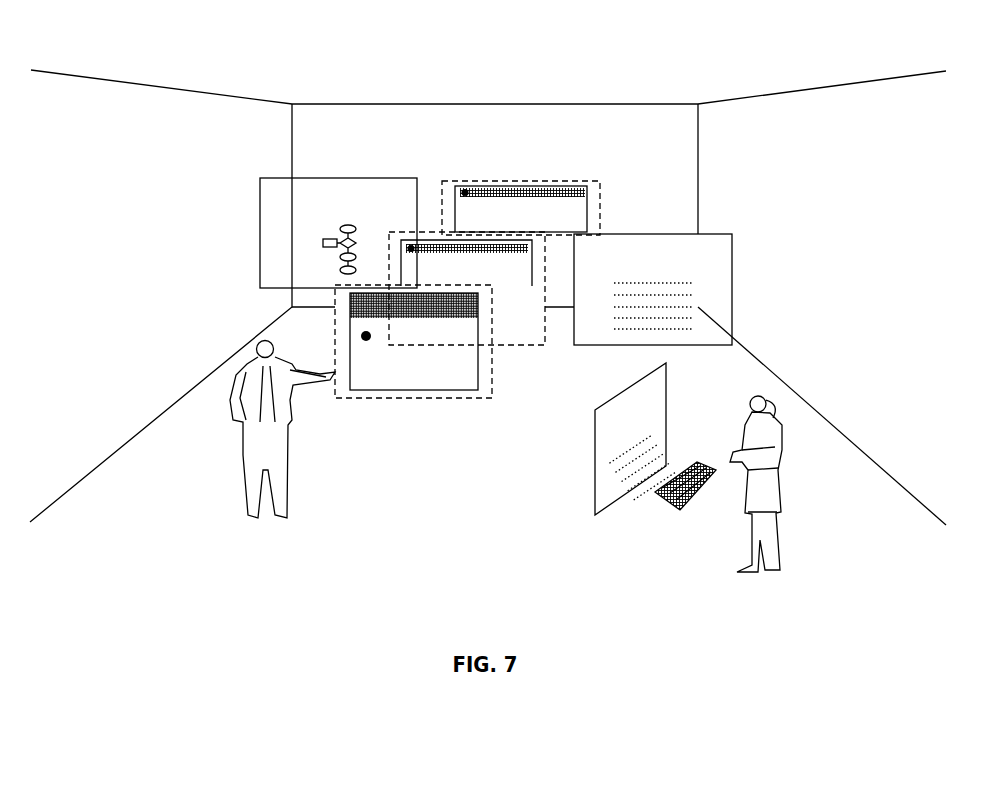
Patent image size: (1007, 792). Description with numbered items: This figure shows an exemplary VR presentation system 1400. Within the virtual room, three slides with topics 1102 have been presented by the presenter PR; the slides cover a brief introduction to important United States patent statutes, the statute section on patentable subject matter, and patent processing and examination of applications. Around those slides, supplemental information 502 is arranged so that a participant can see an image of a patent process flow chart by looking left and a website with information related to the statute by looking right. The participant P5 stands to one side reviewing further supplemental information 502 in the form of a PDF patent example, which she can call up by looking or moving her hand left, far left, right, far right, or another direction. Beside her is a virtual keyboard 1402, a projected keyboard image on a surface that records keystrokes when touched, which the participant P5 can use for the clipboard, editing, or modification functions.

The system 1400 is at (128, 303).
The supplemental information 502 is at (259, 234).
The slides with topics 1102 is at (527, 177).
The presenter PR is at (283, 418).
The participant P5 is at (770, 458).
The virtual keyboard 1402 is at (672, 506).